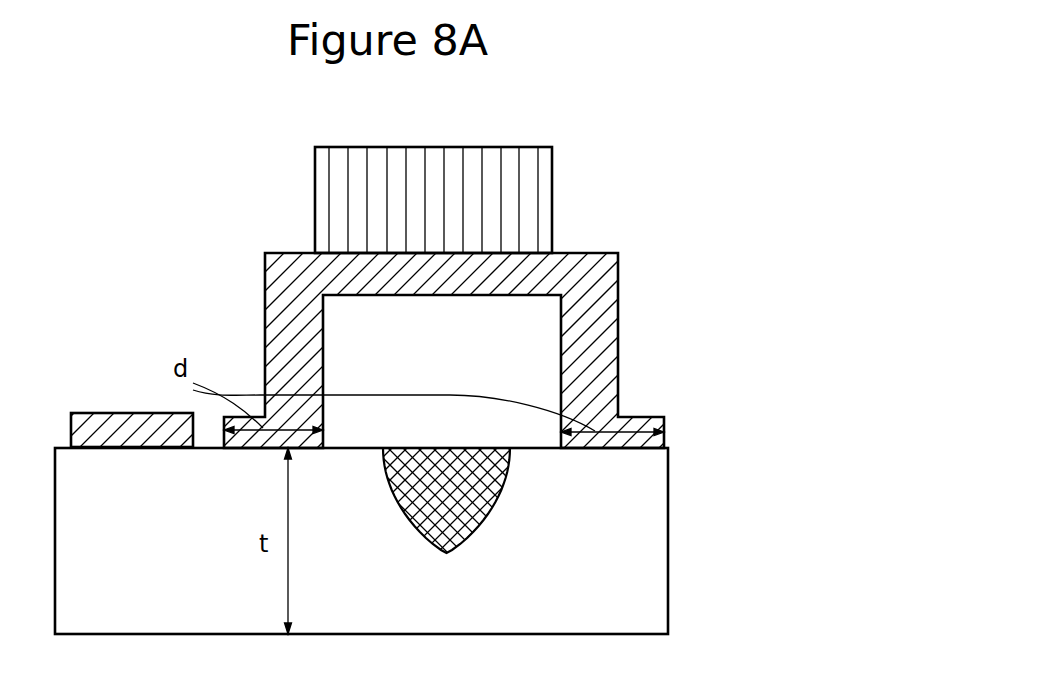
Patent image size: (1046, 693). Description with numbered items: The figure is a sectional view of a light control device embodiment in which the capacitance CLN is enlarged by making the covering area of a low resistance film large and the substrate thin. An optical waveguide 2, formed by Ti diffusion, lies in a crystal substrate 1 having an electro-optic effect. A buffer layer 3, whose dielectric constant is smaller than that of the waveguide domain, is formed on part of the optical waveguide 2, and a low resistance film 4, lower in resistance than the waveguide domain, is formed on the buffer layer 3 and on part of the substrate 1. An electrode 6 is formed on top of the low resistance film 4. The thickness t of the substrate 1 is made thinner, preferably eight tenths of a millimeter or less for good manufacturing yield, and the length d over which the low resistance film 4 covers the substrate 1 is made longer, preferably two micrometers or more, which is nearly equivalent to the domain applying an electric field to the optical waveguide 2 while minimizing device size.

The crystal substrate 1 is at (668, 517).
The optical waveguide 2 is at (473, 537).
The buffer layer 3 is at (560, 297).
The low resistance film 4 is at (618, 373).
The electrode 6 is at (552, 193).